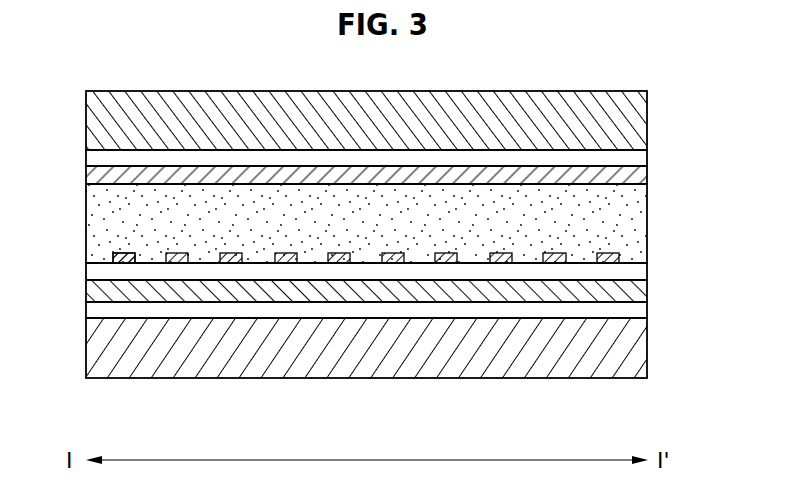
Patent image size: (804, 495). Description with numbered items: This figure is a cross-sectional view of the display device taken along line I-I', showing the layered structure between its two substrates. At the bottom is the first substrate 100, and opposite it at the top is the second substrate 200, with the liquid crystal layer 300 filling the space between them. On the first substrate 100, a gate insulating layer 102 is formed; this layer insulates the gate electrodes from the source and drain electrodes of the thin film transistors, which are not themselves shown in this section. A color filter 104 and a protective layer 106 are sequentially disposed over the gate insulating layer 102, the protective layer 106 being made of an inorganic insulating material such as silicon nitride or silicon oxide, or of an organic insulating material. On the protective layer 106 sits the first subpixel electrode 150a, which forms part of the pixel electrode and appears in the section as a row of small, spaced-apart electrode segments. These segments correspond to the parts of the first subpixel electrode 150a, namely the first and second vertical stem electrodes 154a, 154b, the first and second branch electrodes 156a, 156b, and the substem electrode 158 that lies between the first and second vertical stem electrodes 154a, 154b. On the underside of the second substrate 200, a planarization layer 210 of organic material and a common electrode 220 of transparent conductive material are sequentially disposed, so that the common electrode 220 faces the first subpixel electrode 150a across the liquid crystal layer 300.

The first substrate 100 is at (628, 348).
The gate insulating layer 102 is at (628, 308).
The color filter 104 is at (628, 290).
The protective layer 106 is at (630, 270).
The first subpixel electrode 150a is at (112, 243).
The first vertical stem electrode 154a is at (285, 263).
The second vertical stem electrode 154b is at (446, 263).
The first branch electrode 156a is at (231, 263).
The second branch electrode 156b is at (607, 263).
The substem electrode 158 is at (392, 263).
The second substrate 200 is at (628, 122).
The planarization layer 210 is at (628, 157).
The common electrode 220 is at (628, 173).
The liquid crystal layer 300 is at (627, 225).